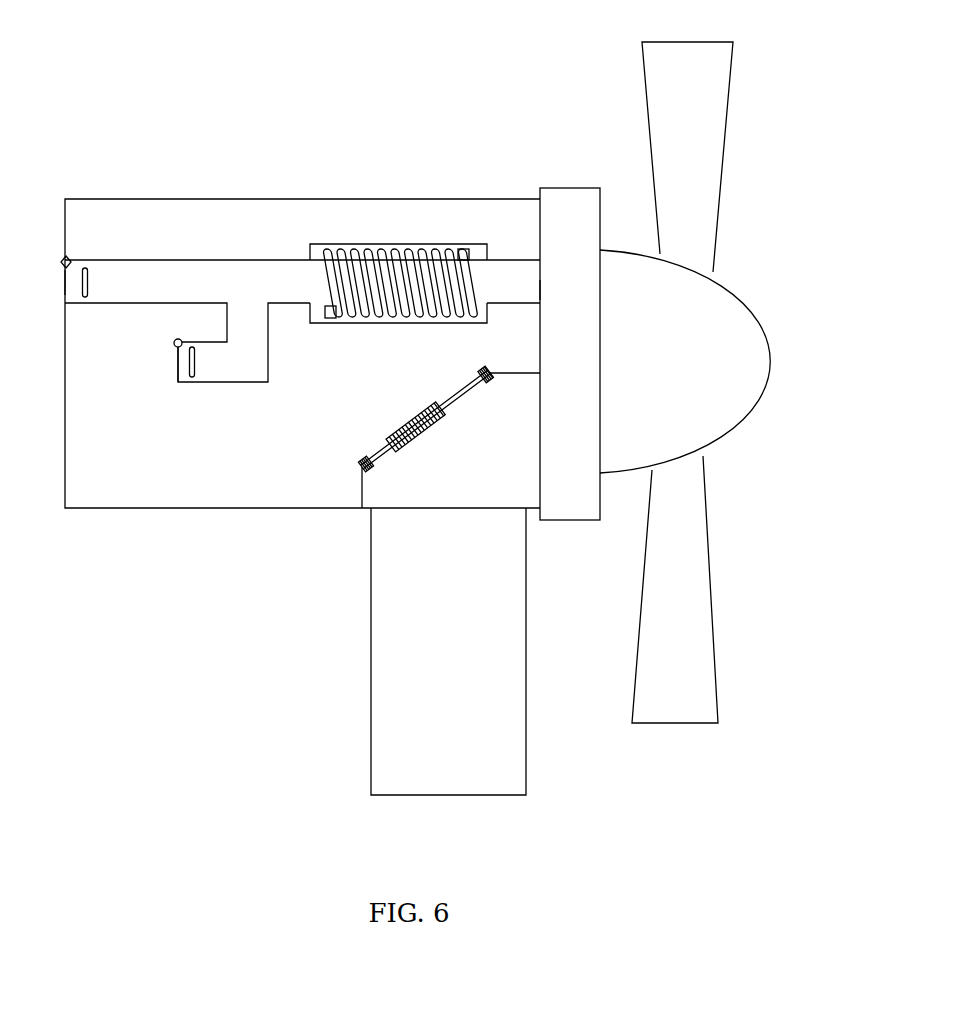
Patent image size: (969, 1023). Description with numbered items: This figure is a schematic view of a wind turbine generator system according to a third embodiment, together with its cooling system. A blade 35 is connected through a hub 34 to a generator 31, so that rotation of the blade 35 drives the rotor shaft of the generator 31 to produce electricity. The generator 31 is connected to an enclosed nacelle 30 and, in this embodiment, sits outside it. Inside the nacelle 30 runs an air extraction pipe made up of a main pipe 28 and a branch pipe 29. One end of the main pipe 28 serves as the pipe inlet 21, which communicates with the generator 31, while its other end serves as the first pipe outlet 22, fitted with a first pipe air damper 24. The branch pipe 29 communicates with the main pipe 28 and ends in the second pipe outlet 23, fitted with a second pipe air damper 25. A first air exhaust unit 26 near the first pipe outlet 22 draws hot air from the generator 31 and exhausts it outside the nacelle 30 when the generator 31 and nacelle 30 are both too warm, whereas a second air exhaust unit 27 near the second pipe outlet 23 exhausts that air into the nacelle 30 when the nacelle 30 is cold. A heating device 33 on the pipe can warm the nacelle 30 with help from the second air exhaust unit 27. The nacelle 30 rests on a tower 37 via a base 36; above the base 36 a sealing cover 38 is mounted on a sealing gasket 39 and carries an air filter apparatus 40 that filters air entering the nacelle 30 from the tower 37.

The pipe inlet 21 is at (540, 293).
The first pipe outlet 22 is at (68, 284).
The second pipe outlet 23 is at (181, 340).
The first pipe air damper 24 is at (63, 287).
The second pipe air damper 25 is at (178, 372).
The first air exhaust unit 26 is at (86, 275).
The second air exhaust unit 27 is at (197, 368).
The main pipe 28 is at (168, 273).
The branch pipe 29 is at (258, 378).
The nacelle 30 is at (122, 205).
The generator 31 is at (566, 197).
The heating device 33 is at (345, 245).
The hub 34 is at (716, 280).
The blade 35 is at (656, 165).
The base 36 is at (372, 498).
The tower 37 is at (371, 585).
The sealing cover 38 is at (465, 385).
The sealing gasket 39 is at (362, 460).
The air filter apparatus 40 is at (392, 418).